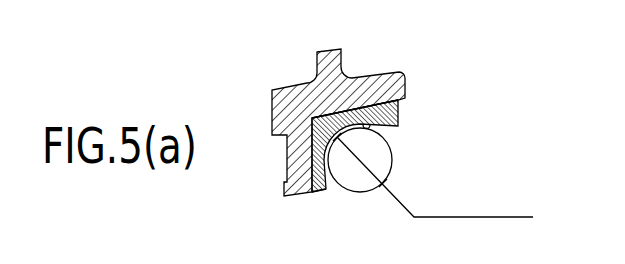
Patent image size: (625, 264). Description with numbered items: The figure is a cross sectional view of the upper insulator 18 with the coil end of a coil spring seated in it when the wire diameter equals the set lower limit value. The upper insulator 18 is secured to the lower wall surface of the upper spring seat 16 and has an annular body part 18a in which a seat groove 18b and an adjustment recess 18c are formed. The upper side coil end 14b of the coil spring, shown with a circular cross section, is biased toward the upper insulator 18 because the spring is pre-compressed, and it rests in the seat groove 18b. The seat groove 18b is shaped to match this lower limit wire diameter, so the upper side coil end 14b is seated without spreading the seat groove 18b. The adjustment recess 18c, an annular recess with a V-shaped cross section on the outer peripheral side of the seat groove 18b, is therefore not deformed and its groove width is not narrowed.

The upper spring seat 16 is at (405, 88).
The upper insulator 18 is at (406, 141).
The annular body part 18a is at (316, 192).
The seat groove 18b is at (371, 124).
The adjustment recess 18c is at (387, 127).
The upper side coil end 14b is at (370, 193).